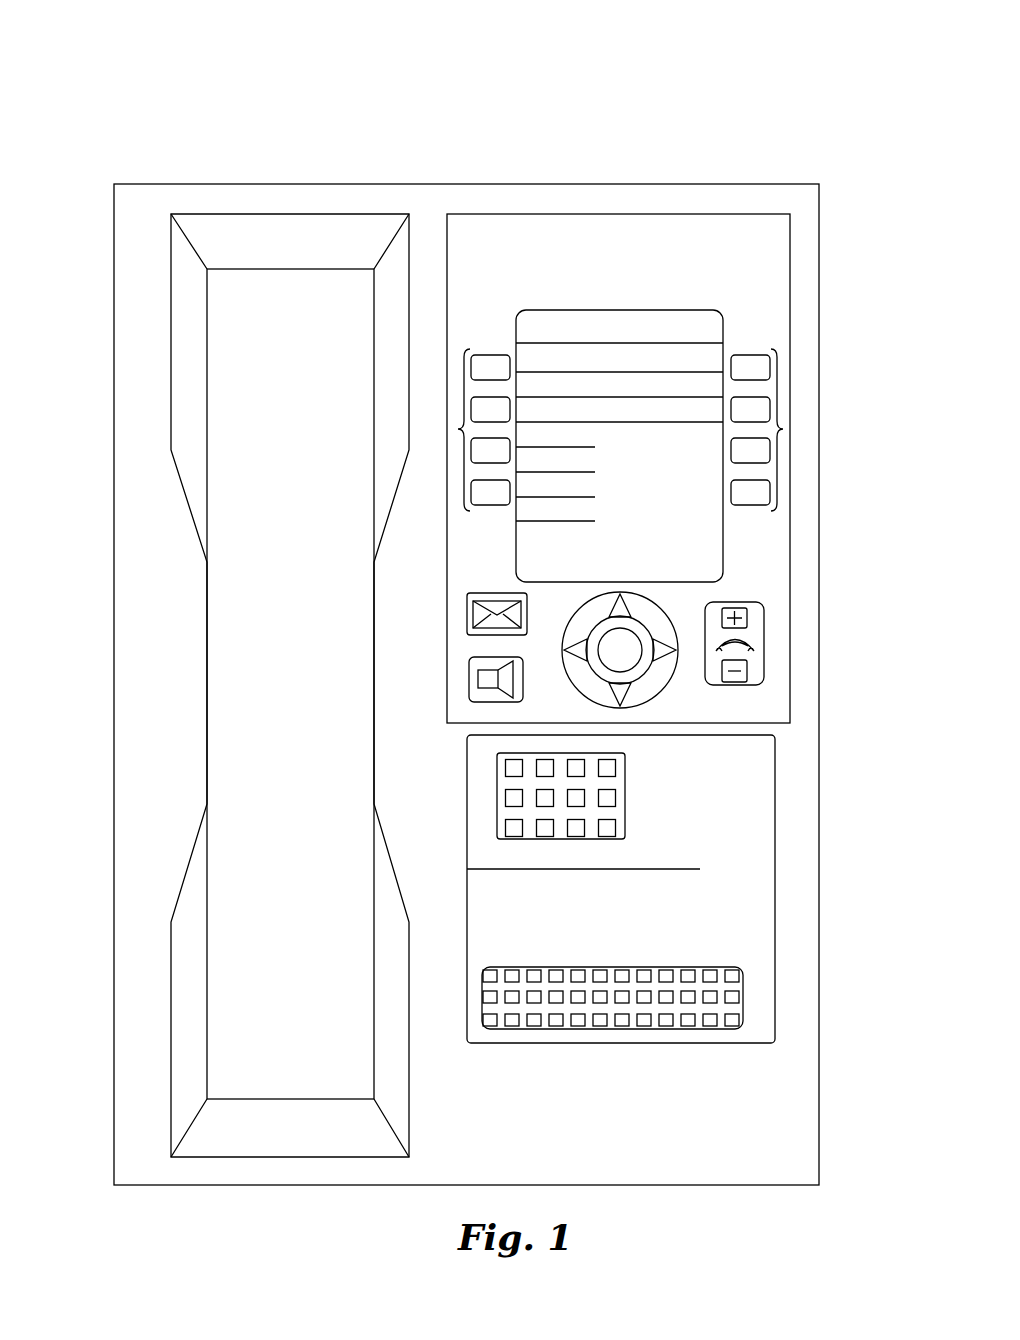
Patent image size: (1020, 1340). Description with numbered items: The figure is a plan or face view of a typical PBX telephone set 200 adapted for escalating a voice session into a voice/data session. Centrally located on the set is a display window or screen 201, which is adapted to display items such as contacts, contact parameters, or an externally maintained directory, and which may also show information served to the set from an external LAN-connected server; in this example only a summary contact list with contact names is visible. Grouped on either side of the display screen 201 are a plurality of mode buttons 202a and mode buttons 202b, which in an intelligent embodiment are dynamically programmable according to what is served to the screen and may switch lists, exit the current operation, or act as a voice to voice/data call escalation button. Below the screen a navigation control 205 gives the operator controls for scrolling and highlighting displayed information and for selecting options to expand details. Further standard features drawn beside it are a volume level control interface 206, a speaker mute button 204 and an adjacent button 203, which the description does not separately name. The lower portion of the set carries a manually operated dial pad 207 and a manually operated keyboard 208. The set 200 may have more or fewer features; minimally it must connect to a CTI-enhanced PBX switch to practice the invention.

The PBX telephone set 200 is at (483, 125).
The display window 201 is at (617, 302).
The mode buttons 202a is at (783, 429).
The mode buttons 202b is at (458, 429).
The message key 203 is at (466, 616).
The speaker mute button 204 is at (468, 681).
The navigation control 205 is at (667, 690).
The volume level control interface 206 is at (767, 648).
The dial pad 207 is at (628, 800).
The keyboard 208 is at (607, 960).